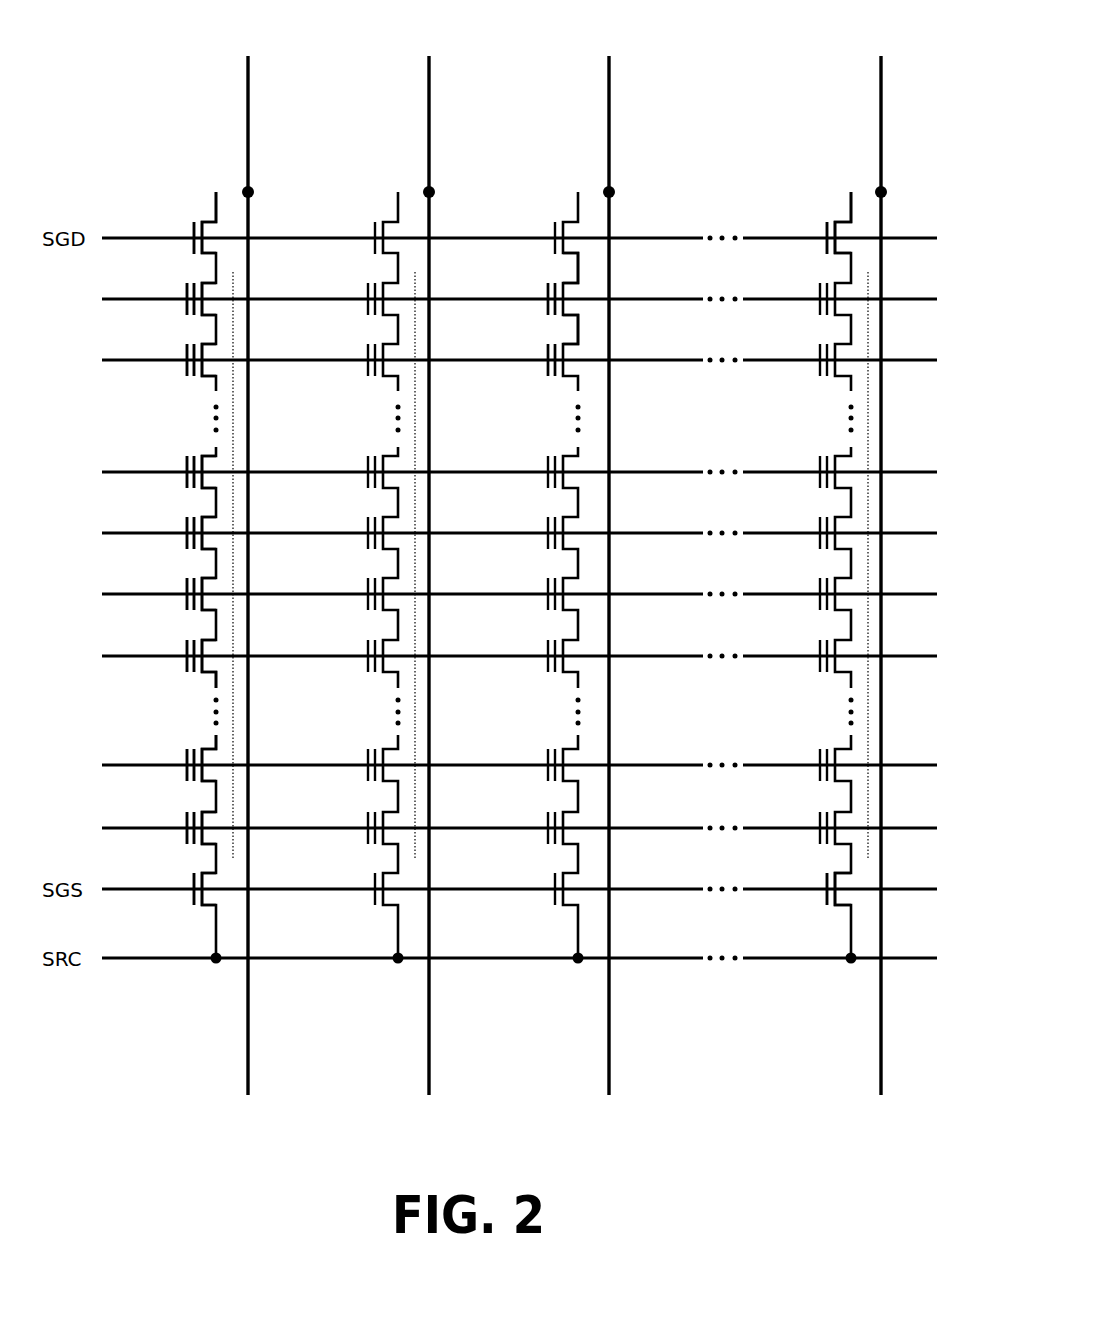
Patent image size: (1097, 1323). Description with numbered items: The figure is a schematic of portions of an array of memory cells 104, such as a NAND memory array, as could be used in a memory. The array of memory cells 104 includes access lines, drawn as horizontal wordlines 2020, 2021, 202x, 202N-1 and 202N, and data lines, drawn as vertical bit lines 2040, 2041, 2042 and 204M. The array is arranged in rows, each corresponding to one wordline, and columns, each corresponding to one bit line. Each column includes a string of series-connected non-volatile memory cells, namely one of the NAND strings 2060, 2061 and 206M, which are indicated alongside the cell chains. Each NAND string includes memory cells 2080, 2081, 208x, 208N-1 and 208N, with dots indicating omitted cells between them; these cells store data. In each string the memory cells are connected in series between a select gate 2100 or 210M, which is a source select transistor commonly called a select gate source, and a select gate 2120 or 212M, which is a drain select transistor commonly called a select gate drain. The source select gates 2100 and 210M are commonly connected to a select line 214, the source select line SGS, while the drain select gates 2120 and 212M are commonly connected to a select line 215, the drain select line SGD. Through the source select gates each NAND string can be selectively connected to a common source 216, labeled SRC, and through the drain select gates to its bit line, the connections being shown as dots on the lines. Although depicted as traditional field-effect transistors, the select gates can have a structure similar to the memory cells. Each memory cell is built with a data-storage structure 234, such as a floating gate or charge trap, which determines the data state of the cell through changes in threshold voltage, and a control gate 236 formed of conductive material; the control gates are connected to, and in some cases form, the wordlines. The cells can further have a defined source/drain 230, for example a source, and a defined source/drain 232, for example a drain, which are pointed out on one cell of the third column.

The array of memory cells 104 is at (778, 58).
The bit line 2040 is at (250, 110).
The bit line 2041 is at (431, 110).
The bit line 2042 is at (611, 110).
The bit line 204M is at (879, 110).
The NAND string 2060 is at (234, 572).
The NAND string 2061 is at (416, 572).
The NAND string 206M is at (869, 572).
The select gate 2120 is at (205, 222).
The select gate 212M is at (840, 222).
The select gate 2100 is at (210, 905).
The select gate 210M is at (843, 905).
The select line 215 is at (782, 236).
The select line 214 is at (770, 887).
The common source 216 is at (172, 960).
The wordline 202N is at (150, 297).
The wordline 202N-1 is at (770, 363).
The wordline 202x is at (770, 659).
The wordline 2021 is at (770, 763).
The wordline 2020 is at (152, 826).
The memory cell 208N is at (200, 310).
The memory cell 208N-1 is at (200, 374).
The memory cell 208x is at (210, 674).
The memory cell 2081 is at (210, 742).
The memory cell 2080 is at (200, 840).
The source/drain 230 is at (581, 335).
The source/drain 232 is at (581, 276).
The data-storage structure 234 is at (548, 285).
The control gate 236 is at (548, 316).